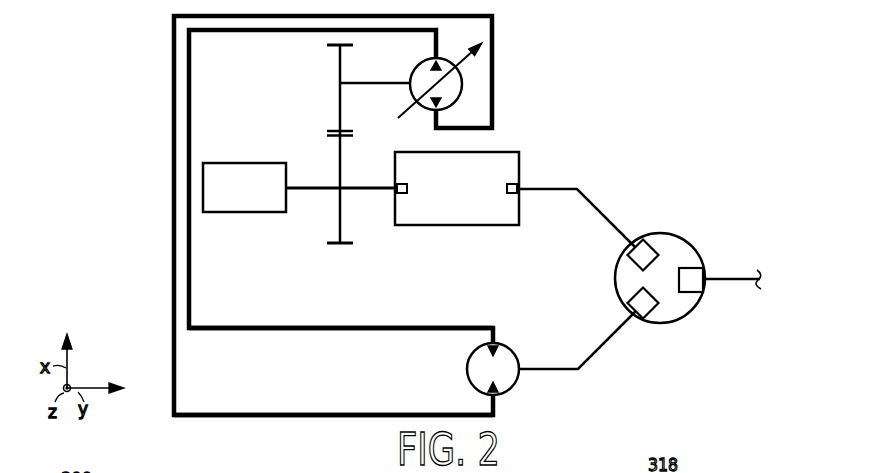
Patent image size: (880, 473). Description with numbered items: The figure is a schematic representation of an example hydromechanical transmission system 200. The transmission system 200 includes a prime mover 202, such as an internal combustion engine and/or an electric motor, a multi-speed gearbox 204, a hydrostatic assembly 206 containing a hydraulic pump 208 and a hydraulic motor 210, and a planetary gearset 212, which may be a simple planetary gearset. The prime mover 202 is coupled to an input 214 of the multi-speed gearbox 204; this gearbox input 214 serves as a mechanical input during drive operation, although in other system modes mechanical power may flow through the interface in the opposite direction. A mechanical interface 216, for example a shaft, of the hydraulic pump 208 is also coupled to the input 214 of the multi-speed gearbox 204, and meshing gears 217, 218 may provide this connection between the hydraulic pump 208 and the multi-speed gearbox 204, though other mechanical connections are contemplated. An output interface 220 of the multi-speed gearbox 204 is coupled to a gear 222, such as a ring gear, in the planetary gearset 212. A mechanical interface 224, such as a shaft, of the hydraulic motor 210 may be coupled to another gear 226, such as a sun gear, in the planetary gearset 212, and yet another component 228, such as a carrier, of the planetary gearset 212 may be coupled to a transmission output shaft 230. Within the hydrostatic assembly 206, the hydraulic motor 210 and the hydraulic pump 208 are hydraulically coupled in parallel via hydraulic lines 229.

The transmission system 200 is at (86, 66).
The prime mover 202 is at (238, 162).
The multi-speed gearbox 204 is at (454, 227).
The hydrostatic assembly 206 is at (524, 60).
The hydraulic pump 208 is at (414, 72).
The hydraulic motor 210 is at (467, 375).
The planetary gearset 212 is at (711, 222).
The input 214 is at (396, 193).
The mechanical interface 216 is at (388, 86).
The gear 217 is at (337, 63).
The gear 218 is at (338, 231).
The output interface 220 is at (520, 192).
The gear 222 is at (636, 252).
The mechanical interface 224 is at (527, 372).
The gear 226 is at (632, 309).
The component 228 is at (697, 285).
The hydraulic lines 229 is at (318, 331).
The transmission output shaft 230 is at (748, 275).